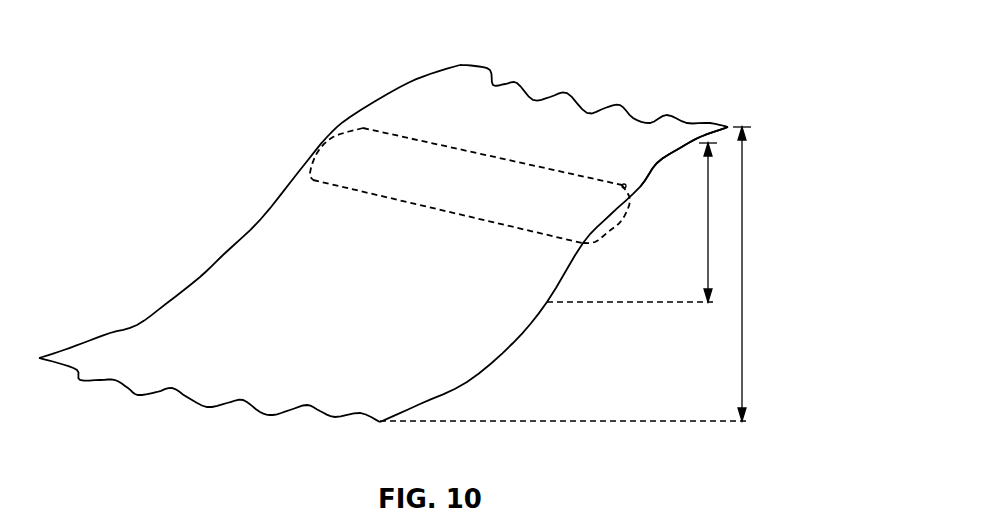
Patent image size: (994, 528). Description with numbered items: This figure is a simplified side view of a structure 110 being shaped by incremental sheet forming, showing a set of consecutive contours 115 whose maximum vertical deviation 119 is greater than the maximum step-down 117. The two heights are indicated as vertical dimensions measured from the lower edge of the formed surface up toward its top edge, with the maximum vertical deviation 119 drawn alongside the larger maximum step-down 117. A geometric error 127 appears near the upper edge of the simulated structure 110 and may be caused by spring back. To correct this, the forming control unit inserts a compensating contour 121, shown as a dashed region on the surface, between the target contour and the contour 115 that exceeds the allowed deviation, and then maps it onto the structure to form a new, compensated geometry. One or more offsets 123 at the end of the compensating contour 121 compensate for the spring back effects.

The structure 110 is at (137, 325).
The set of consecutive contours 115 is at (223, 258).
The compensating contour 121 is at (382, 130).
The offsets 123 is at (643, 195).
The geometric error 127 is at (680, 148).
The maximum vertical deviation 119 is at (709, 222).
The maximum step-down 117 is at (741, 275).